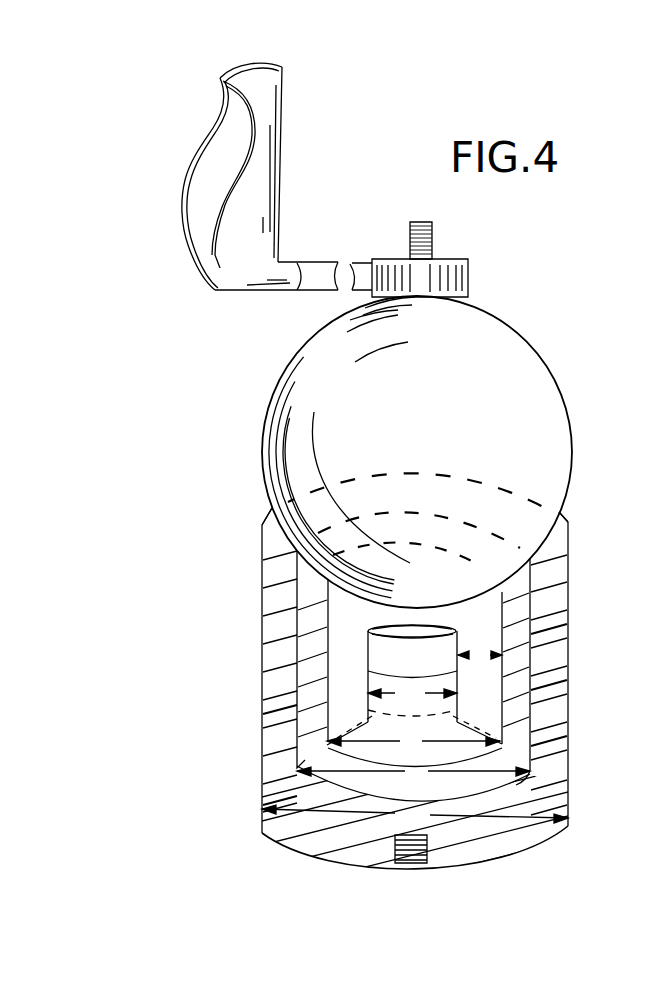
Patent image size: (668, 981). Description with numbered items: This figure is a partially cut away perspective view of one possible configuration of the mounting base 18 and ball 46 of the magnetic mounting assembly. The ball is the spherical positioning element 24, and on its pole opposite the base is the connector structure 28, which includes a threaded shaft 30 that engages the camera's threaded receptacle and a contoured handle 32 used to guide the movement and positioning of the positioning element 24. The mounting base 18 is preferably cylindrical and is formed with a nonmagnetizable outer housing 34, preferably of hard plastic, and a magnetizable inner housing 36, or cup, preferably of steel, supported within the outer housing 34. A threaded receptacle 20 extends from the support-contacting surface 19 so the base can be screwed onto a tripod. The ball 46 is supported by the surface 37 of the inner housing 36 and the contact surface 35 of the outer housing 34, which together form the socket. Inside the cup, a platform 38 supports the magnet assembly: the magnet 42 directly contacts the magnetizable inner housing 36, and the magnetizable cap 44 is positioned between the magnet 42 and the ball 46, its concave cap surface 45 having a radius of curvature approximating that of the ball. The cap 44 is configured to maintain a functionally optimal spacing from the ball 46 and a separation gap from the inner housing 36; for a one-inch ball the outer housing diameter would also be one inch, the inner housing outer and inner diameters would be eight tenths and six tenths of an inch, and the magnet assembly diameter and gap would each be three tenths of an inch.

The mounting base 18 is at (568, 788).
The support-contacting surface 19 is at (333, 863).
The receptacle 20 is at (413, 863).
The positioning element 24 is at (503, 313).
The connector structure 28 is at (372, 260).
The threaded shaft 30 is at (432, 243).
The handle 32 is at (277, 132).
The nonmagnetizable outer housing 34 is at (275, 672).
The positioning element contact surface 35 is at (573, 497).
The magnetizable inner housing 36 is at (520, 607).
The inner housing surface 37 is at (240, 545).
The platform 38 is at (475, 727).
The magnet 42 is at (325, 740).
The magnetizable cap 44 is at (414, 685).
The cap surface 45 is at (403, 637).
The ball 46 is at (421, 439).